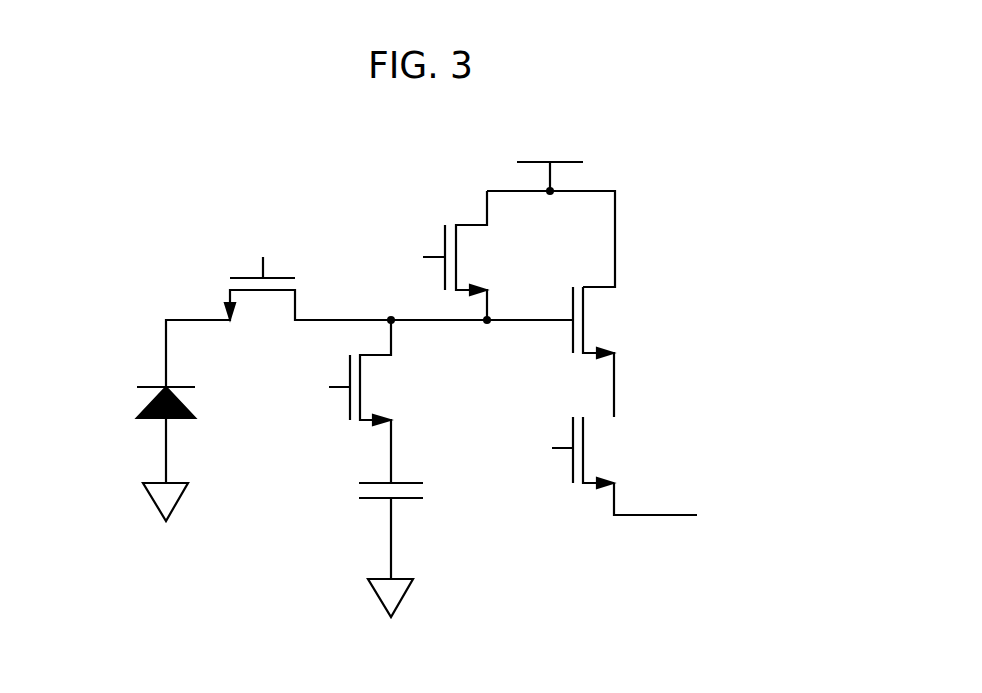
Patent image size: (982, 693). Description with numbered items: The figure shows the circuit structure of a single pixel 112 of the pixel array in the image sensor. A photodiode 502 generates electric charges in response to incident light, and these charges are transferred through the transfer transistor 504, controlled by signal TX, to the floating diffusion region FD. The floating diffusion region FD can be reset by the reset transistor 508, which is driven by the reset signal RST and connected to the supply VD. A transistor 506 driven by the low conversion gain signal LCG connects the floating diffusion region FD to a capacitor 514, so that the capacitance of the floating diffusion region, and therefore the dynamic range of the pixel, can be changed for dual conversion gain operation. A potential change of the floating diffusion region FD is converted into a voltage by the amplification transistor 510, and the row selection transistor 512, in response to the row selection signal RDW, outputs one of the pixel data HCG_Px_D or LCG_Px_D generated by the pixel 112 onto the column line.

The pixel 112 is at (202, 144).
The photodiode 502 is at (150, 394).
The transfer transistor 504 is at (277, 277).
The low conversion gain transistor 506 is at (347, 410).
The reset transistor 508 is at (438, 240).
The amplification transistor 510 is at (602, 321).
The row selection transistor 512 is at (600, 449).
The capacitor 514 is at (370, 500).